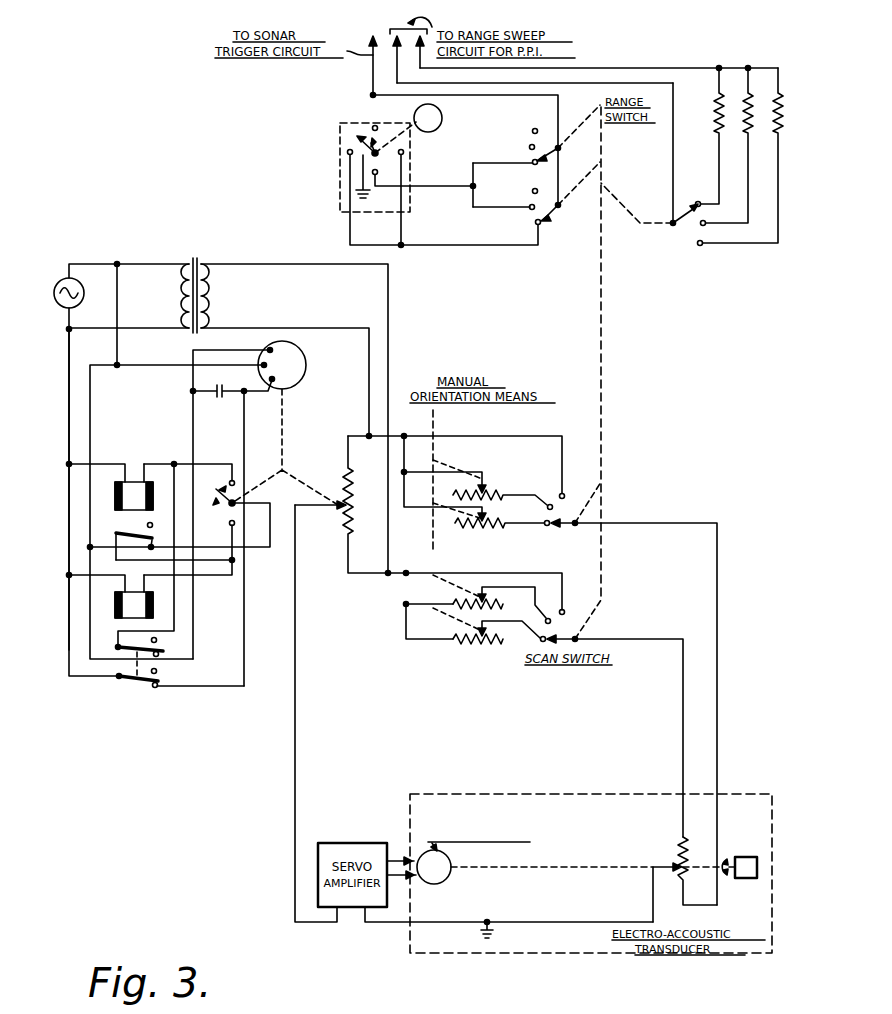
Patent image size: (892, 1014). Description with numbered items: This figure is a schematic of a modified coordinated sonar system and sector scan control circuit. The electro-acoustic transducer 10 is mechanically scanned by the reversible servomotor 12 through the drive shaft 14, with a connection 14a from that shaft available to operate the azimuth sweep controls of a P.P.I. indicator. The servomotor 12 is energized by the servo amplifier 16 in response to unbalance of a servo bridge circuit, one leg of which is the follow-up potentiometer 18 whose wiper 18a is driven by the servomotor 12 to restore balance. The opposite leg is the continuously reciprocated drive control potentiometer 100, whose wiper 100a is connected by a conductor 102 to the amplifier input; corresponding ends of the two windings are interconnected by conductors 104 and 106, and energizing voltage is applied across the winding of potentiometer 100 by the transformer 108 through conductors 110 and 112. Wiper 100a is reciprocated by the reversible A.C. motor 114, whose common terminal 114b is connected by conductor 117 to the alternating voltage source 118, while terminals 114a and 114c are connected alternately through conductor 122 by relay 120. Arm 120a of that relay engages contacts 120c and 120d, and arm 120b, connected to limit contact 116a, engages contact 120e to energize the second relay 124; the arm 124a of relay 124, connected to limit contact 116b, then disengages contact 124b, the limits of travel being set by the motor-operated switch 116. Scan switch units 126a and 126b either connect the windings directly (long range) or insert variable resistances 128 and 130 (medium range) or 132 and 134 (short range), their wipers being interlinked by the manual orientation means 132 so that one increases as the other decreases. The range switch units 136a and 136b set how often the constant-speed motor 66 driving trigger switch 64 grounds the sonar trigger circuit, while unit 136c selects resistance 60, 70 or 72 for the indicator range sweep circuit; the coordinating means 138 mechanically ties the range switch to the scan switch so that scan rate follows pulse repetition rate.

The sonar transducer 10 is at (748, 857).
The reversible servomotor 12 is at (450, 857).
The drive shaft 14 is at (508, 867).
The connection 14a is at (568, 888).
The servoamplifier 16 is at (373, 908).
The follow-up potentiometer 18 is at (681, 844).
The wiper 18a is at (662, 870).
The resistor 60 is at (712, 118).
The motor-driven trigger switch 64 is at (340, 143).
The motor 66 is at (421, 131).
The resistor 70 is at (740, 133).
The resistor 72 is at (772, 133).
The drive control potentiometer 100 is at (345, 531).
The wiper 100a is at (339, 506).
The conductor 102 is at (297, 903).
The conductor 104 is at (393, 574).
The conductor 106 is at (371, 438).
The transformer 108 is at (196, 258).
The conductor 110 is at (314, 322).
The conductor 112 is at (388, 345).
The reversible A.C. motor 114 is at (305, 359).
The motor terminal 114a is at (270, 349).
The common terminal 114b is at (263, 363).
The motor terminal 114c is at (272, 382).
The motor-operated switch 116 is at (226, 495).
The stationary contact 116a is at (235, 481).
The stationary contact 116b is at (229, 523).
The conductor 117 is at (118, 366).
The alternating voltage source 118 is at (58, 282).
The relay 120 is at (115, 604).
The switch arm 120a is at (126, 680).
The switch arm 120b is at (157, 642).
The contact 120c is at (157, 672).
The contact 120d is at (154, 688).
The contact 120e is at (159, 655).
The conductor 122 is at (69, 436).
The second relay 124 is at (115, 496).
The switch arm 124a is at (137, 533).
The contact 124b is at (152, 540).
The scan switch unit 126a is at (566, 526).
The scan switch unit 126b is at (565, 637).
The variable resistance 128 is at (490, 495).
The variable resistance 130 is at (492, 605).
The manual orientation means 132 is at (435, 428).
The variable resistance 134 is at (480, 643).
The range switch unit 136a is at (562, 152).
The range switch unit 136b is at (545, 223).
The range switch unit 136c is at (688, 214).
The mechanical coordinating means 138 is at (601, 348).